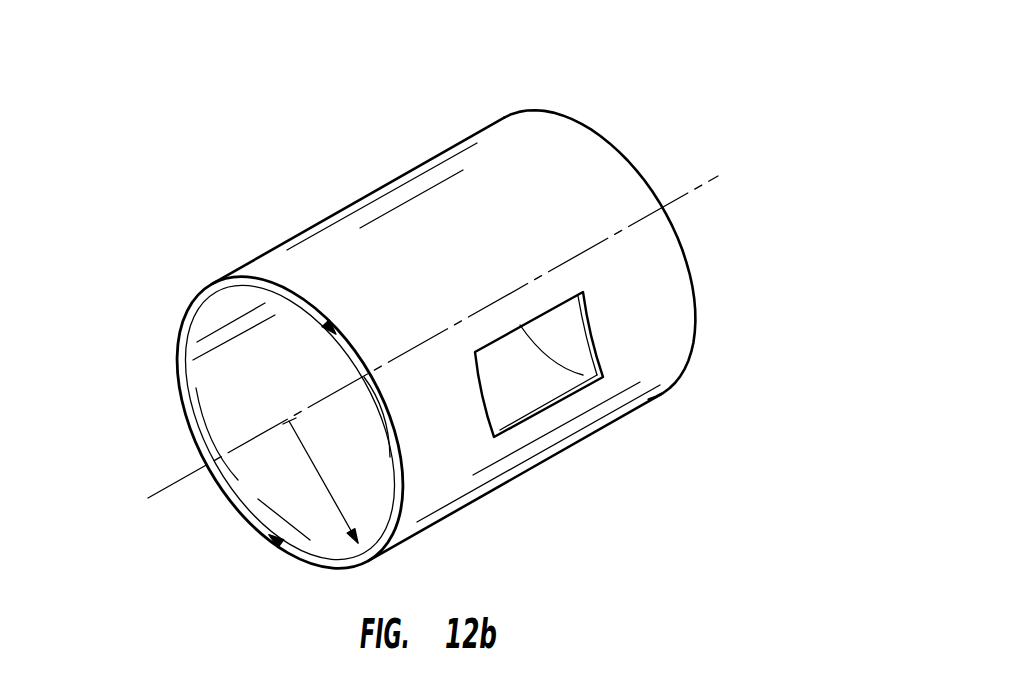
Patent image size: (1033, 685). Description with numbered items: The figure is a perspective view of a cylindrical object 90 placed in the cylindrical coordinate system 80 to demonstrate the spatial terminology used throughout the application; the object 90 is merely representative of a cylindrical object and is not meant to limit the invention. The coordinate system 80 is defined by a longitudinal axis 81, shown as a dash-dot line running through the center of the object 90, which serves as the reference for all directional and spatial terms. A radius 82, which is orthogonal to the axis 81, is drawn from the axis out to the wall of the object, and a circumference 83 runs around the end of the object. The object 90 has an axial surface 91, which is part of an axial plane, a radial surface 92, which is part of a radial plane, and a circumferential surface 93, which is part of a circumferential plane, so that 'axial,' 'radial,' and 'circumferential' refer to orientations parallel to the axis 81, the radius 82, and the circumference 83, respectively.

The cylindrical coordinate system 80 is at (617, 125).
The longitudinal axis 81 is at (158, 497).
The radius 82 is at (330, 490).
The circumference 83 is at (183, 310).
The object 90 is at (471, 114).
The axial surface 91 is at (566, 390).
The radial surface 92 is at (303, 553).
The circumferential surface 93 is at (410, 221).